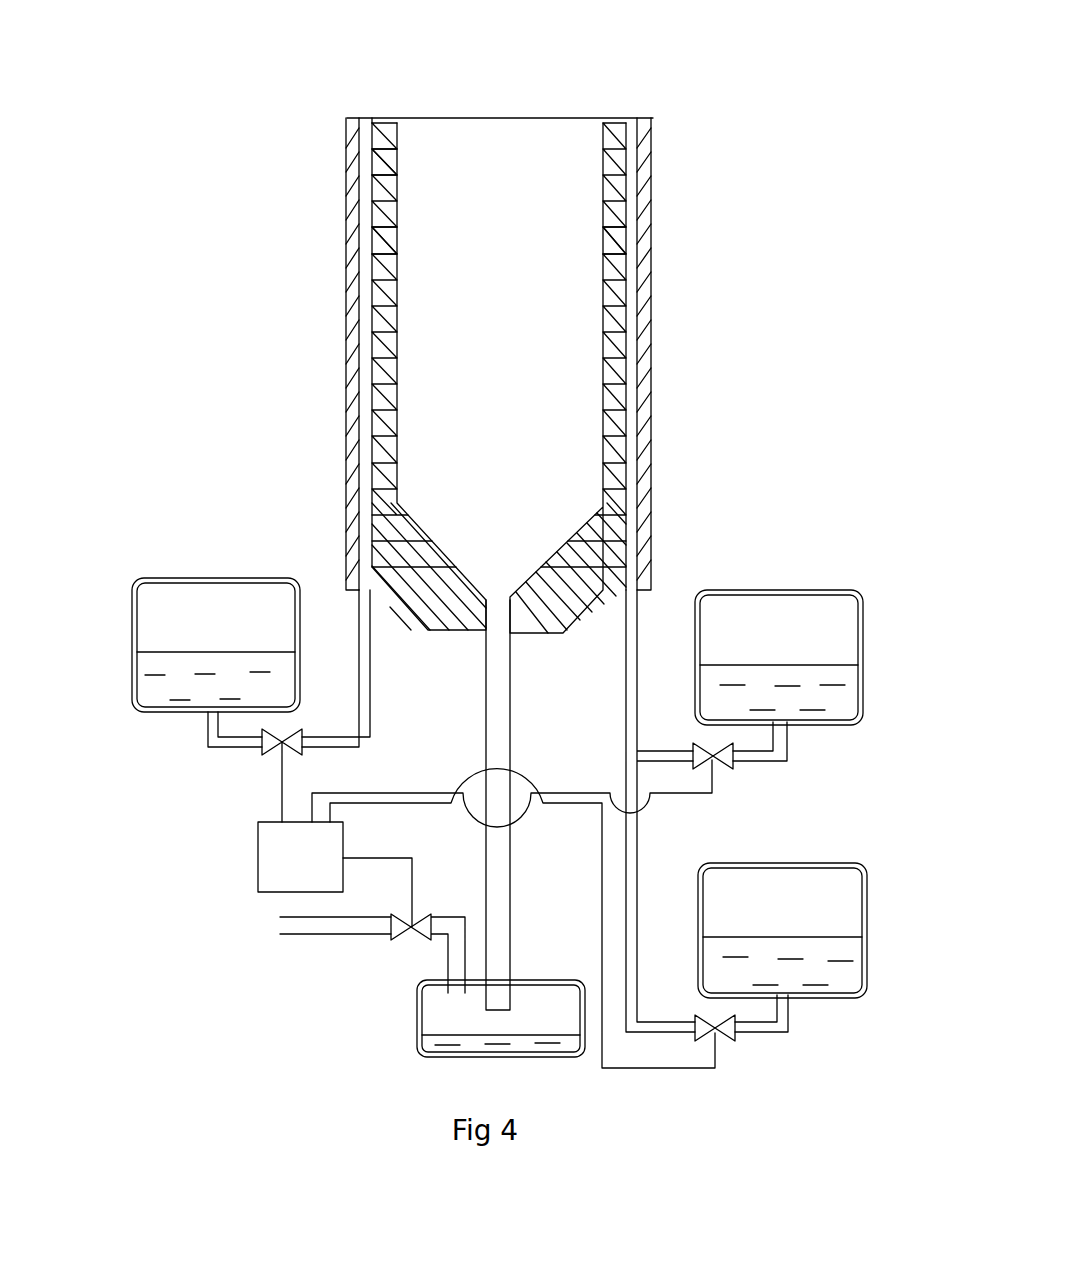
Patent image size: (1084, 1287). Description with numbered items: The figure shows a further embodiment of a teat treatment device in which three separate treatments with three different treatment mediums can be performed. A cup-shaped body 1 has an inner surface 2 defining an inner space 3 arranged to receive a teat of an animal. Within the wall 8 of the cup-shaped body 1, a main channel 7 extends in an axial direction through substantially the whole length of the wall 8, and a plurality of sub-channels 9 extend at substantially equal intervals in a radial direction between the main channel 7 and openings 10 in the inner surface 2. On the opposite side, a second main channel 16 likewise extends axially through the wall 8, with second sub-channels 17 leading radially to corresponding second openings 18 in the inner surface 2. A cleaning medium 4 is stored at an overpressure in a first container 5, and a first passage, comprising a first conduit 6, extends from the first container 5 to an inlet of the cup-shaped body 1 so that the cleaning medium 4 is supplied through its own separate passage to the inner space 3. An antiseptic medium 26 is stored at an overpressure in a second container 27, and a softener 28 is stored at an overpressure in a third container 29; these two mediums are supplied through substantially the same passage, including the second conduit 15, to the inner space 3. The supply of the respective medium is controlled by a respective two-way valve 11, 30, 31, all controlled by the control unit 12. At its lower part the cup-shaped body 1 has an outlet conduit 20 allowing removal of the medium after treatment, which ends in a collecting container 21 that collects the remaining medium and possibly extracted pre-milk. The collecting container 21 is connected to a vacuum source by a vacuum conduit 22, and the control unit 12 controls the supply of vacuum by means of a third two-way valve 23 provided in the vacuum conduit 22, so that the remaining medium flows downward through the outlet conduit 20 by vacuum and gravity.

The cup-shaped body 1 is at (642, 102).
The inner surface 2 is at (397, 382).
The inner space 3 is at (496, 439).
The cleaning medium 4 is at (168, 680).
The first container 5 is at (190, 600).
The first conduit 6 is at (371, 740).
The main channel 7 is at (358, 468).
The wall 8 is at (358, 302).
The sub-channels 9 is at (397, 178).
The openings 10 is at (397, 258).
The first two-way valve 11 is at (262, 745).
The control unit 12 is at (282, 858).
The second conduit 15 is at (625, 712).
The second main channel 16 is at (638, 428).
The second sub-channels 17 is at (610, 183).
The second openings 18 is at (606, 262).
The outlet conduit 20 is at (487, 708).
The collecting container 21 is at (543, 1010).
The vacuum conduit 22 is at (320, 925).
The third two-way valve 23 is at (412, 927).
The antiseptic medium 26 is at (800, 700).
The second container 27 is at (777, 624).
The softener 28 is at (802, 973).
The third container 29 is at (823, 908).
The two-way valve 30 is at (718, 762).
The two-way valve 31 is at (718, 1035).